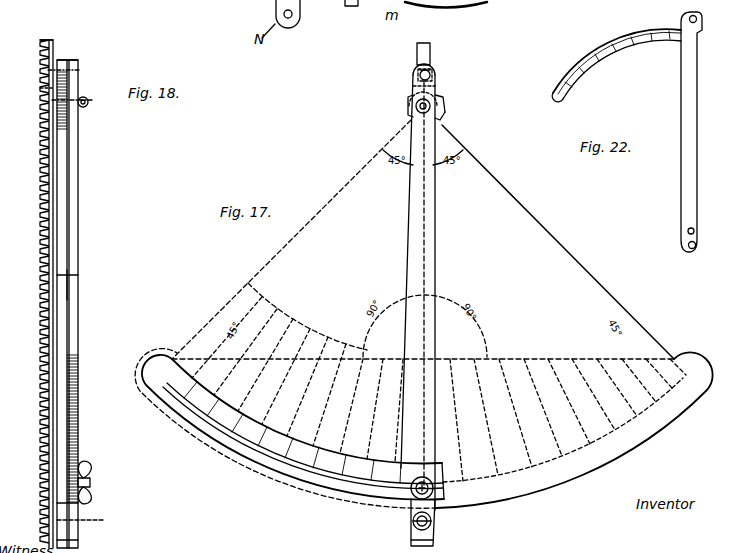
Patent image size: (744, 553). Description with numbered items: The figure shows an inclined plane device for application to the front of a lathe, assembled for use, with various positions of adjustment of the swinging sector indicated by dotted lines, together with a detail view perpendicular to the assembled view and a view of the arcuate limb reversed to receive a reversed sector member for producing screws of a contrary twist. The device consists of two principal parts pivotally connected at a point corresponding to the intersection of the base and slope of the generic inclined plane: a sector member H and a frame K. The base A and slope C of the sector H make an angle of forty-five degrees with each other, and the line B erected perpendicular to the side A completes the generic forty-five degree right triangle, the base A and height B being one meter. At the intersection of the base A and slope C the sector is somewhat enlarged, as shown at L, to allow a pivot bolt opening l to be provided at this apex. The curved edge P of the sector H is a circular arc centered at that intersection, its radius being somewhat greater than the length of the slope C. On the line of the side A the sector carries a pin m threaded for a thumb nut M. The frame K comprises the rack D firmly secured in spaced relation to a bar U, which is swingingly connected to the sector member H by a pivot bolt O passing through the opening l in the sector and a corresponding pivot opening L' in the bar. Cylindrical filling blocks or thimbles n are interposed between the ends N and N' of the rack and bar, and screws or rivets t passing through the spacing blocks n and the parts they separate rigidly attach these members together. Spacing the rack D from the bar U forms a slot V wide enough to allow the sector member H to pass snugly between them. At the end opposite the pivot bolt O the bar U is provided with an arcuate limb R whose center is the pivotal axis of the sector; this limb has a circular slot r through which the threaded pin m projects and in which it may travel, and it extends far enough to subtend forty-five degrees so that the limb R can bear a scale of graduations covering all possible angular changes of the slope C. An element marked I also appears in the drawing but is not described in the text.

In FIG. 17, the base A is at (427, 257).
In FIG. 17, the height B is at (558, 352).
In FIG. 17, the slope C is at (558, 242).
In FIG. 18, the rack D is at (40, 235).
In FIG. 17, the rack D is at (431, 51).
In FIG. 17, the sector member H is at (660, 422).
In FIG. 17, the lug I is at (446, 108).
In FIG. 18, the frame K is at (79, 304).
In FIG. 17, the frame K is at (409, 287).
In FIG. 18, the enlarged portion L is at (80, 103).
In FIG. 17, the pivot opening L' is at (455, 97).
In FIG. 22, the pivot opening L' is at (703, 219).
In FIG. 18, the thumb nut M is at (96, 468).
In FIG. 17, the thumb nut M is at (412, 524).
In FIG. 18, the pin m is at (96, 488).
In FIG. 17, the pin m is at (431, 481).
In FIG. 18, the end of rack N is at (84, 283).
In FIG. 17, the end of rack N is at (427, 307).
In FIG. 22, the end of rack N is at (704, 129).
In FIG. 18, the end of bar N' is at (31, 283).
In FIG. 17, the end of bar N' is at (401, 80).
In FIG. 18, the filling block n is at (72, 541).
In FIG. 17, the filling block n is at (418, 76).
In FIG. 18, the pivot bolt O is at (92, 103).
In FIG. 17, the pivot bolt O is at (416, 107).
In FIG. 17, the curved edge P is at (568, 479).
In FIG. 18, the arcuate limb R is at (80, 422).
In FIG. 17, the arcuate limb R is at (160, 362).
In FIG. 22, the arcuate limb R is at (616, 65).
In FIG. 17, the circular slot r is at (228, 448).
In FIG. 22, the circular slot r is at (624, 44).
In FIG. 18, the screw t is at (40, 90).
In FIG. 17, the screw t is at (433, 69).
In FIG. 18, the bar U is at (84, 264).
In FIG. 17, the bar U is at (398, 275).
In FIG. 22, the bar U is at (697, 137).
In FIG. 18, the slot V is at (78, 275).
In FIG. 18, the pivot bolt opening l is at (92, 512).